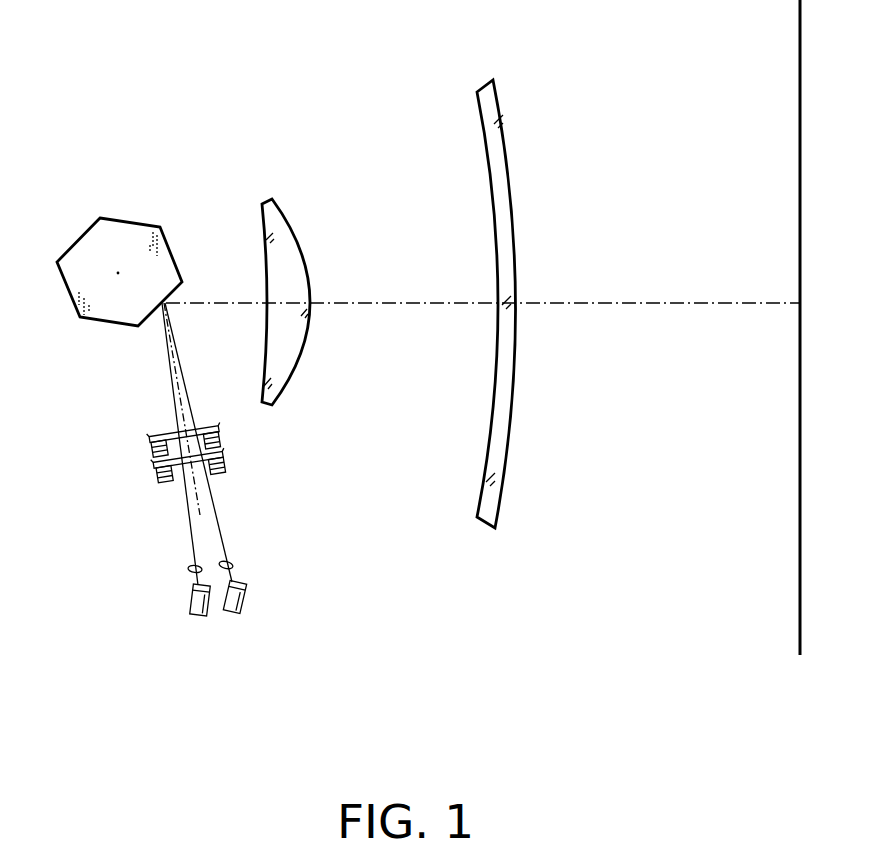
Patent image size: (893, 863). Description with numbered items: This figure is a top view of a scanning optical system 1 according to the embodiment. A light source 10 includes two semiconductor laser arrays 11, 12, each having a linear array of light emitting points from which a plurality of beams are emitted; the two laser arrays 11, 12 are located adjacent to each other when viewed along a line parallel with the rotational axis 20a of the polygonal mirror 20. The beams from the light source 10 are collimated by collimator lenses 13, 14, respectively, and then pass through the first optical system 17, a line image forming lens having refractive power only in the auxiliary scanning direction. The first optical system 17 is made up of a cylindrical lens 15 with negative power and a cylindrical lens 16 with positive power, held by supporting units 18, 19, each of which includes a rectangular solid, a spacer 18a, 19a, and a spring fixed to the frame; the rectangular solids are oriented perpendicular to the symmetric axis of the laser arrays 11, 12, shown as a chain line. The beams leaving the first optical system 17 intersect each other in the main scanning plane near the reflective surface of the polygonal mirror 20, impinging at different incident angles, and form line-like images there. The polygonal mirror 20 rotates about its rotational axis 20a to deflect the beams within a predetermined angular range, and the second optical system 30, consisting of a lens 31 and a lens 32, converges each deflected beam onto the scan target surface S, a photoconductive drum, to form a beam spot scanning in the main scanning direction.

The scanning optical system 1 is at (64, 88).
The light source 10 is at (217, 620).
The semiconductor laser array 11 is at (203, 617).
The semiconductor laser array 12 is at (238, 613).
The collimator lens 13 is at (188, 570).
The collimator lens 14 is at (233, 565).
The cylindrical lens 15 is at (157, 470).
The cylindrical lens 16 is at (157, 443).
The first optical system 17 is at (183, 478).
The supporting unit 18 is at (238, 484).
The spacer 18a is at (224, 453).
The supporting unit 19 is at (221, 424).
The spacer 19a is at (230, 443).
The polygonal mirror 20 is at (117, 219).
The rotational axis 20a is at (118, 273).
The second optical system 30 is at (408, 269).
The lens 31 is at (292, 232).
The lens 32 is at (525, 304).
The scan target surface S is at (799, 552).